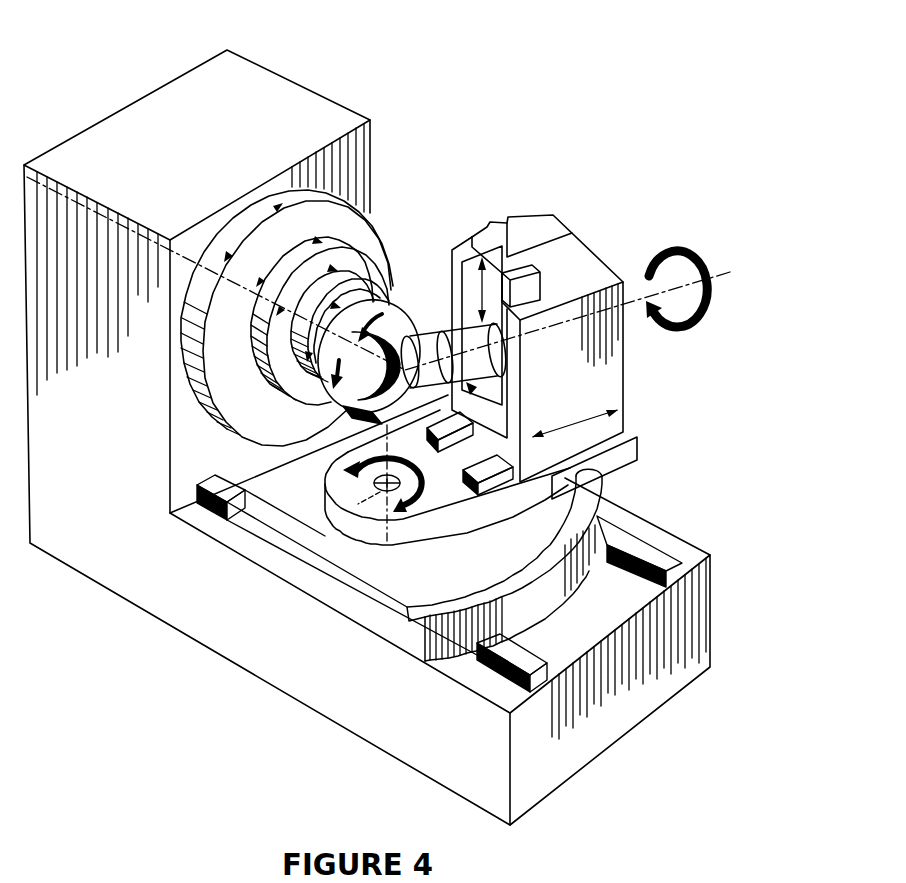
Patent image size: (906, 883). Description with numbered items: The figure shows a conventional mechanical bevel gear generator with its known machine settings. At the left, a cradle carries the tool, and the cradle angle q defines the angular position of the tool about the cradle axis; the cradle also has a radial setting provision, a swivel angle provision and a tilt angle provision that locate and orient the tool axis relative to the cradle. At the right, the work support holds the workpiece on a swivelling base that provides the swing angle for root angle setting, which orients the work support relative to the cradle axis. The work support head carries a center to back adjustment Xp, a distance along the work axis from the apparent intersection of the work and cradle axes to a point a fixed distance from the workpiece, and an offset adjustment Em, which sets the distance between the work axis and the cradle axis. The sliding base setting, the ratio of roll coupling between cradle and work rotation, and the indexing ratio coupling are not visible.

The cradle angle q is at (313, 197).
The work offset Em is at (488, 278).
The center-to-back or head setting Xp is at (589, 357).